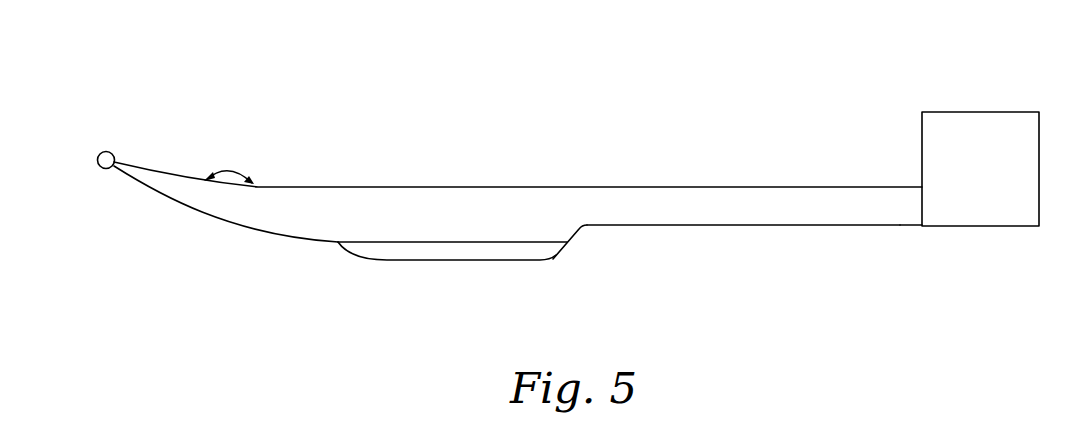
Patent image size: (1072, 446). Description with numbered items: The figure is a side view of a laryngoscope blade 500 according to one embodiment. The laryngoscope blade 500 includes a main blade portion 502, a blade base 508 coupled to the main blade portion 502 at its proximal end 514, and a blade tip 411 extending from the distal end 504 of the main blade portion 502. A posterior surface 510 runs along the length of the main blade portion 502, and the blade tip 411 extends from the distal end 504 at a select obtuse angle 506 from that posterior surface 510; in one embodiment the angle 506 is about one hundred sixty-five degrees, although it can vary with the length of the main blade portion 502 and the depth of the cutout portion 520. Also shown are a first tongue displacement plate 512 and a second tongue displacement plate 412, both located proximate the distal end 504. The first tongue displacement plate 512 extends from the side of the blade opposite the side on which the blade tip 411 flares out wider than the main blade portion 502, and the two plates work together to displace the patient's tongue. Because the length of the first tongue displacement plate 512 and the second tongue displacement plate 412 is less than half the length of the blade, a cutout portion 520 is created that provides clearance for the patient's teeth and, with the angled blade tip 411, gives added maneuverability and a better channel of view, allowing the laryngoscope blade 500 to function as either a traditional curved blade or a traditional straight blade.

The laryngoscope blade 500 is at (733, 113).
The blade tip 411 is at (143, 174).
The second tongue displacement plate 412 is at (538, 252).
The main blade portion 502 is at (644, 204).
The distal end 504 is at (268, 215).
The obtuse angle 506 is at (225, 170).
The blade base 508 is at (995, 122).
The posterior surface 510 is at (492, 186).
The first tongue displacement plate 512 is at (565, 232).
The proximal end 514 is at (921, 204).
The cutout portion 520 is at (738, 257).